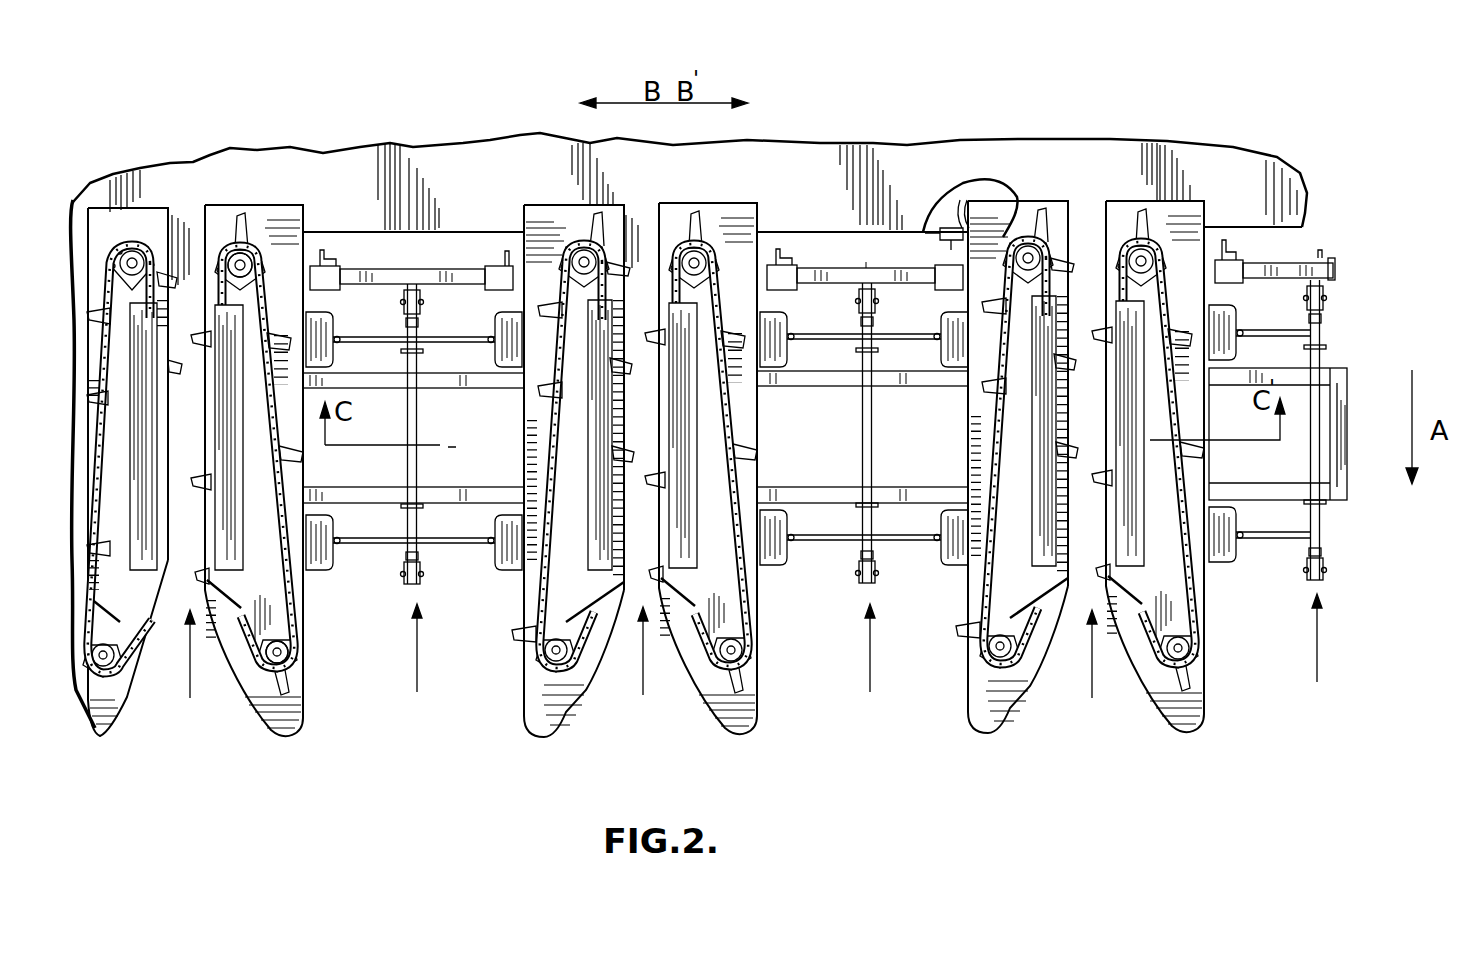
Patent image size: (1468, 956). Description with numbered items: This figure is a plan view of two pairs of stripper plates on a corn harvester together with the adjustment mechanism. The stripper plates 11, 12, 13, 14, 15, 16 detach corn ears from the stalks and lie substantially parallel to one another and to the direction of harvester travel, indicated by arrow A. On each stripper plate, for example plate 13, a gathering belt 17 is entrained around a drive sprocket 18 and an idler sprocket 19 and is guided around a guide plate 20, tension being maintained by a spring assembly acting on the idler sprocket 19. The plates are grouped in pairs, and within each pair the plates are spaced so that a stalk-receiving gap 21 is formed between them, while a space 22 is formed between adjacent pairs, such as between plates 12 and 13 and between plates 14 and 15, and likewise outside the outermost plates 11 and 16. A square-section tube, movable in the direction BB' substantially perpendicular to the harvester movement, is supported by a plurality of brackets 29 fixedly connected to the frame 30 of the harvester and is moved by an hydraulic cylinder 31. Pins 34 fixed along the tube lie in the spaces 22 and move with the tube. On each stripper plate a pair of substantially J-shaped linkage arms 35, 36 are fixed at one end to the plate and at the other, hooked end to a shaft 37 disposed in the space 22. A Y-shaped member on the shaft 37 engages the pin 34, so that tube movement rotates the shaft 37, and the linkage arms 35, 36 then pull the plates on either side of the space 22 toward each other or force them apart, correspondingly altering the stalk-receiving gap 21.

The stripper plate 11 is at (121, 690).
The stripper plate 12 is at (281, 471).
The stripper plate 13 is at (532, 732).
The stripper plate 14 is at (722, 715).
The stripper plate 15 is at (1003, 700).
The stripper plate 16 is at (1190, 712).
The gathering belt 17 is at (222, 215).
The drive sprocket 18 is at (262, 227).
The idler sprocket 19 is at (292, 656).
The guide plate 20 is at (247, 595).
The stalk-receiving gap 21 is at (642, 671).
The space 22 is at (869, 665).
The brackets 29 is at (326, 235).
The frame 30 is at (198, 150).
The hydraulic cylinder 31 is at (975, 232).
The pins 34 is at (412, 280).
The linkage arm 35 is at (805, 334).
The linkage arm 36 is at (890, 334).
The shaft 37 is at (870, 446).